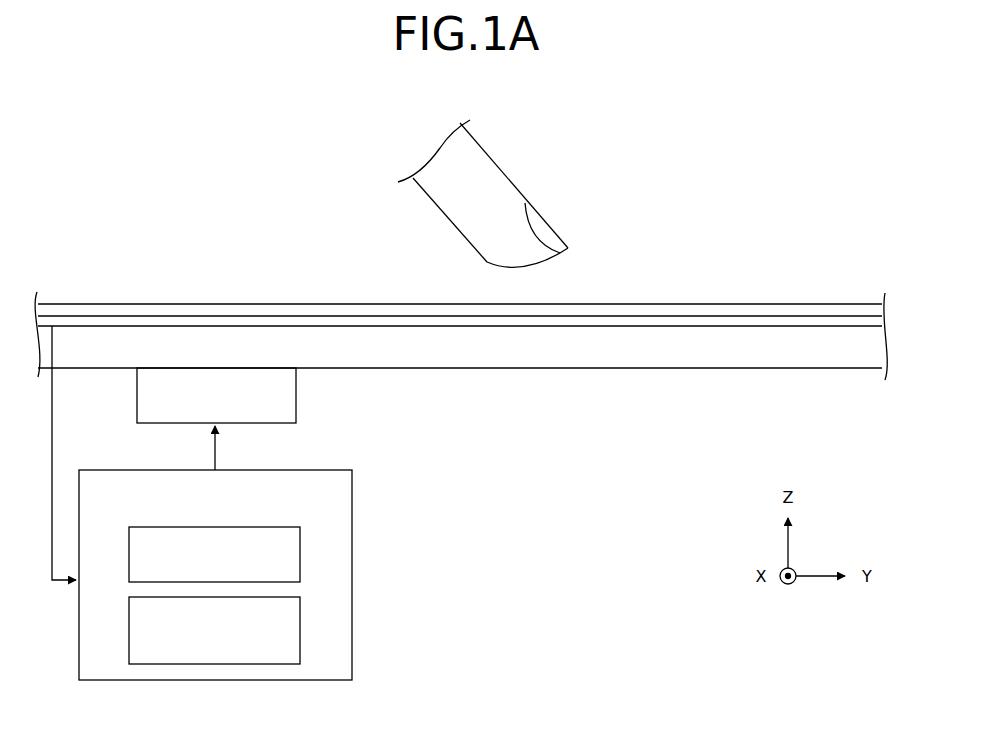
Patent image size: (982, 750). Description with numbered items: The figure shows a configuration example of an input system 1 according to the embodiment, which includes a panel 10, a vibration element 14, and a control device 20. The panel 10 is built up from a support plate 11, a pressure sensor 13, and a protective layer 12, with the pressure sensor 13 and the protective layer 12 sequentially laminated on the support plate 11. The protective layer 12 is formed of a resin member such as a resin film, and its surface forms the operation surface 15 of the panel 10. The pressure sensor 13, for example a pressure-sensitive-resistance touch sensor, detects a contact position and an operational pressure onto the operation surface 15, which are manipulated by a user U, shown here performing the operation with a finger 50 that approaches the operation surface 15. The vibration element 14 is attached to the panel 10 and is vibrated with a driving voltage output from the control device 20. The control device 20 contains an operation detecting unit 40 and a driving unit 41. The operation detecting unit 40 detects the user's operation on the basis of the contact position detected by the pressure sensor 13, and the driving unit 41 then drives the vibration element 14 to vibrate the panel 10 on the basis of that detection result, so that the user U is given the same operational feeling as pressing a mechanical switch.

The input system 1 is at (461, 333).
The panel 10 is at (461, 366).
The support plate 11 is at (623, 433).
The protective layer 12 is at (460, 341).
The pressure sensor 13 is at (682, 322).
The vibration element 14 is at (297, 407).
The operation surface 15 is at (740, 303).
The control device 20 is at (235, 575).
The operation detecting unit 40 is at (301, 626).
The driving unit 41 is at (301, 558).
The finger 50 is at (515, 187).
The user U is at (483, 178).